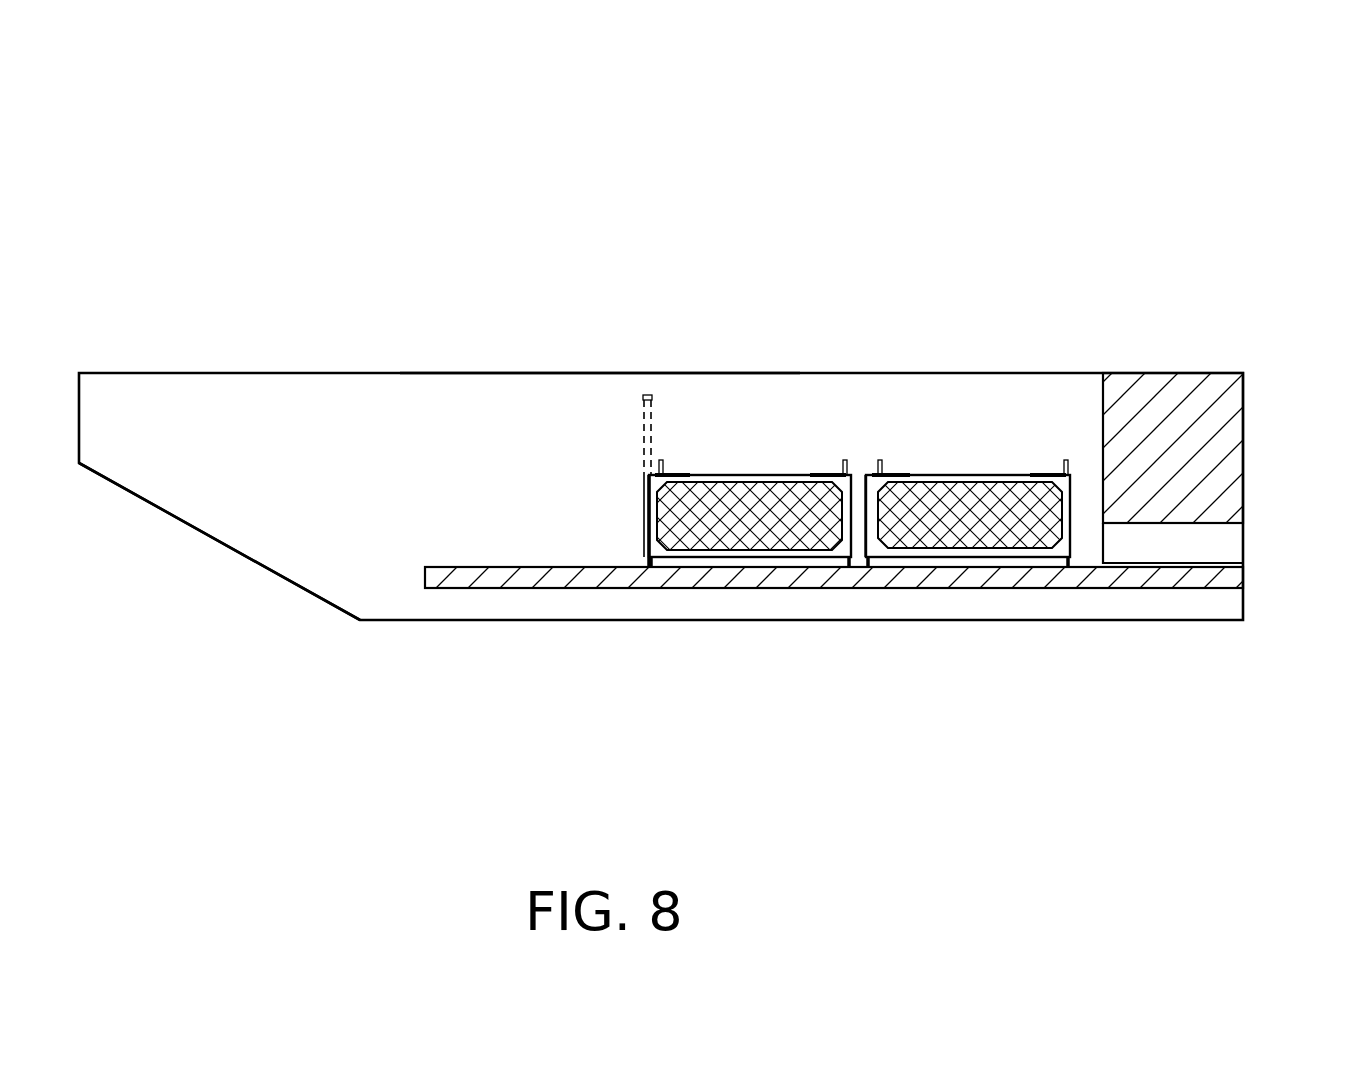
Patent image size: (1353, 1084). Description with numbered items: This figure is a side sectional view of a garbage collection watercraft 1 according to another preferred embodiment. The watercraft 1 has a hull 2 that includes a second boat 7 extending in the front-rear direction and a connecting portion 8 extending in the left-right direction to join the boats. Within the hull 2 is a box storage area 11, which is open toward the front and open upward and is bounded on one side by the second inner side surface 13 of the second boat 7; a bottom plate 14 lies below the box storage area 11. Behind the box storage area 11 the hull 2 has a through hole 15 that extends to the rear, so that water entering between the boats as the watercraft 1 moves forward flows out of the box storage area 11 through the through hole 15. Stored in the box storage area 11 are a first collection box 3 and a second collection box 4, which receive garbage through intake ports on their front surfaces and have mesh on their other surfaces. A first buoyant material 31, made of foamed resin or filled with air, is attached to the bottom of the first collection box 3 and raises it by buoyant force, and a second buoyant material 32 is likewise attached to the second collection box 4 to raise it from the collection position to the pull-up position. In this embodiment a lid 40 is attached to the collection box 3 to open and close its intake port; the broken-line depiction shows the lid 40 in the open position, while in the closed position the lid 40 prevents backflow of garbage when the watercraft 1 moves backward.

The garbage collection watercraft 1 is at (243, 172).
The hull 2 is at (465, 312).
The first collection box 3 is at (785, 535).
The second collection box 4 is at (1003, 533).
The second boat 7 is at (568, 373).
The connecting portion 8 is at (1172, 410).
The box storage area 11 is at (447, 492).
The second inner side surface 13 is at (755, 413).
The bottom plate 14 is at (513, 590).
The through hole 15 is at (1185, 563).
The first buoyant material 31 is at (750, 584).
The second buoyant material 32 is at (967, 583).
The lid 40 is at (643, 527).